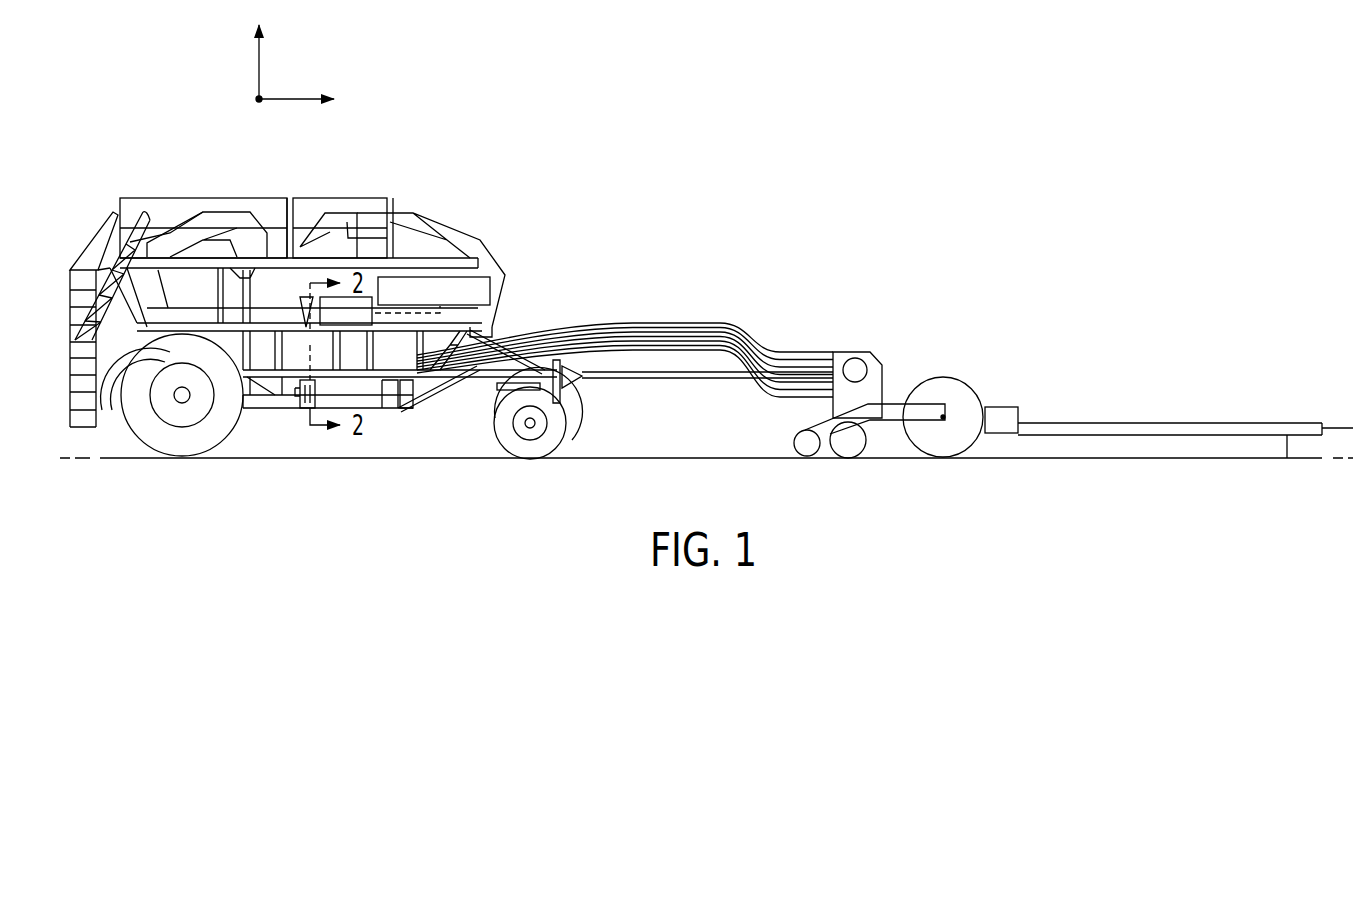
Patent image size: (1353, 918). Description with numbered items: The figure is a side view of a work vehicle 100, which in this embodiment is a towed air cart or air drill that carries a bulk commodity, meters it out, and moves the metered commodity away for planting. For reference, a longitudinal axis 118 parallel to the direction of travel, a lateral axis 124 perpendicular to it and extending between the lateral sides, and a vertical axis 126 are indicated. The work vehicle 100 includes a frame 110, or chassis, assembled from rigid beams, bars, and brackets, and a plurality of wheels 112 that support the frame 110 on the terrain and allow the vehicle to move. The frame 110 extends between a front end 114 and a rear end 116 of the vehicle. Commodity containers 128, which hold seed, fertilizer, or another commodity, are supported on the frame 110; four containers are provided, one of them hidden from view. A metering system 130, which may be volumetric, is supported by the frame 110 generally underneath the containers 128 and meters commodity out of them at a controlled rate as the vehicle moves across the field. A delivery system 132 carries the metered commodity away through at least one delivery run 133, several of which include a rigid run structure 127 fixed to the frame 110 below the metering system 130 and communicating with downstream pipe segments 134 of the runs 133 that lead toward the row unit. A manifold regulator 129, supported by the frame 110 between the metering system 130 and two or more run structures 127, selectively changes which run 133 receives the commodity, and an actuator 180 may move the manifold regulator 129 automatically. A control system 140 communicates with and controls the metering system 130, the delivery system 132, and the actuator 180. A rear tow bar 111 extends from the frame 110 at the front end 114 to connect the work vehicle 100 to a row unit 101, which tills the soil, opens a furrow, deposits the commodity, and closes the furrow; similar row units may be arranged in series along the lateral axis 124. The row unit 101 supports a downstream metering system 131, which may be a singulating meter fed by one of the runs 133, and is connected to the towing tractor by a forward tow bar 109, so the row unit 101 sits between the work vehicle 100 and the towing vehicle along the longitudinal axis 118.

The work vehicle 100 is at (165, 163).
The row unit 101 is at (943, 377).
The forward tow bar 109 is at (1113, 425).
The frame 110 is at (497, 328).
The rear tow bar 111 is at (687, 382).
The wheels 112 is at (188, 460).
The front end 114 is at (574, 358).
The rear end 116 is at (62, 340).
The longitudinal axis 118 is at (290, 103).
The lateral axis 124 is at (257, 96).
The vertical axis 126 is at (262, 62).
The run structure 127 is at (273, 420).
The commodity container 128 is at (215, 240).
The manifold regulator 129 is at (340, 333).
The metering system 130 is at (275, 377).
The downstream metering system 131 is at (857, 352).
The delivery system 132 is at (437, 420).
The delivery run 133 is at (468, 394).
The secondary hoses 134 is at (767, 399).
The control system 140 is at (492, 290).
The actuator 180 is at (367, 330).